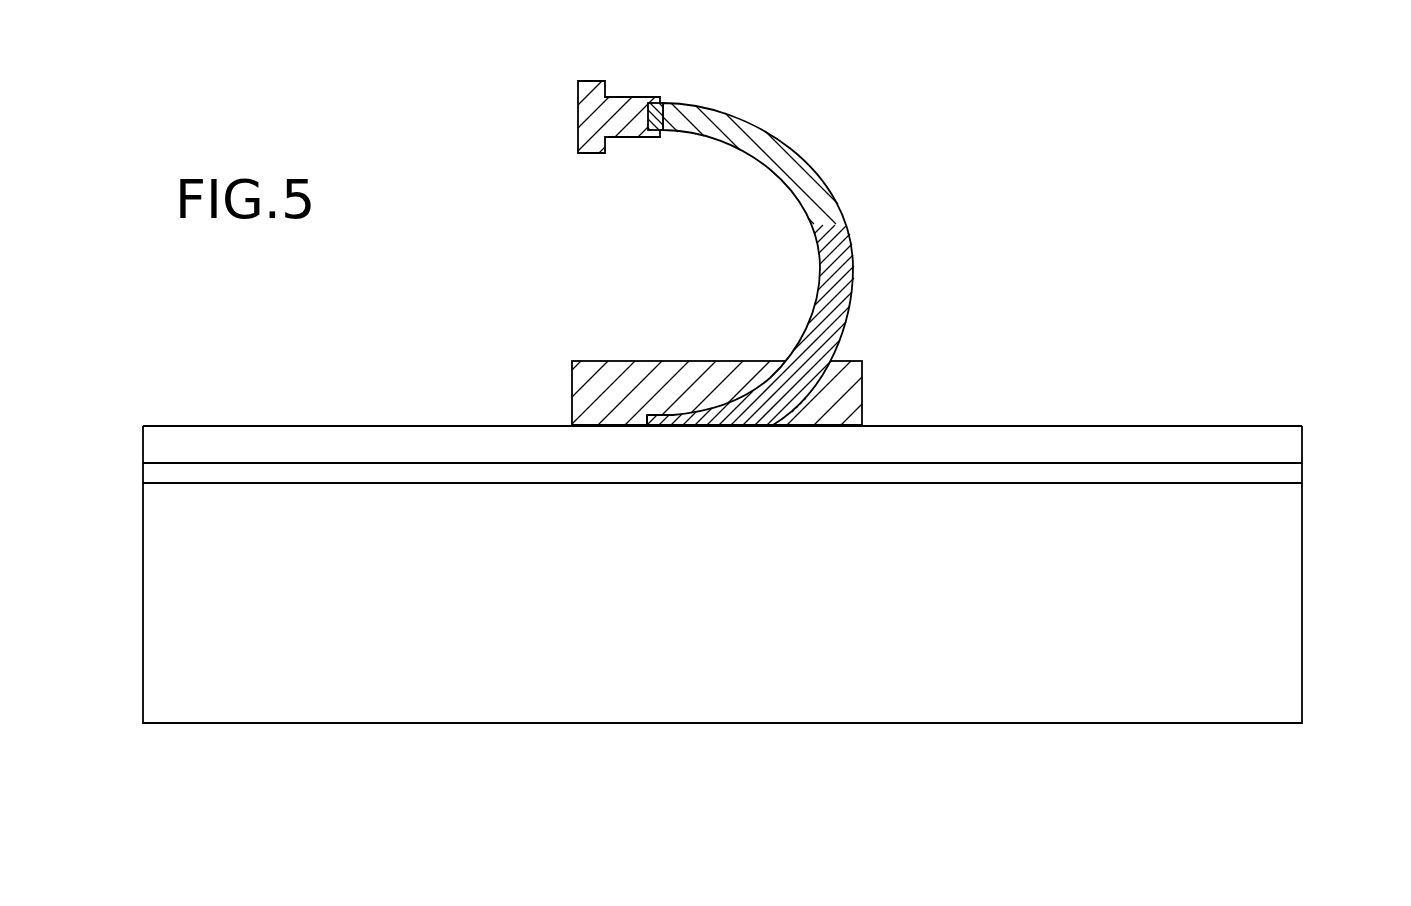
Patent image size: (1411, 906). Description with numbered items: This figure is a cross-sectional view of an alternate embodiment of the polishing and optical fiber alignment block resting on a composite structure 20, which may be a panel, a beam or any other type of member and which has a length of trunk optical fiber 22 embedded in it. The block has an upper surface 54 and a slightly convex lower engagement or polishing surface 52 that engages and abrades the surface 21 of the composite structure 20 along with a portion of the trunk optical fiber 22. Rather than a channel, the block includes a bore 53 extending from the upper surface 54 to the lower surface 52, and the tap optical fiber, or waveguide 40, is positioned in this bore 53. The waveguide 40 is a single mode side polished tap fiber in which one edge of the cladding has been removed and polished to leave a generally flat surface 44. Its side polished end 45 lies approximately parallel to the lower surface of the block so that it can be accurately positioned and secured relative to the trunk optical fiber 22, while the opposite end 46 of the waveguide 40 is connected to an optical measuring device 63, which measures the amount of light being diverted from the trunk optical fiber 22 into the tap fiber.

The composite structure 20 is at (1168, 438).
The surface 21 is at (1050, 427).
The optical fiber 22 is at (1285, 472).
The waveguide 40 is at (783, 155).
The flat surface 44 is at (698, 425).
The side polished end 45 is at (745, 405).
The opposite end 46 is at (670, 117).
The lower engagement or polishing surface 52 is at (597, 425).
The bore 53 is at (800, 347).
The upper surface 54 is at (605, 360).
The optical measuring device 63 is at (613, 106).